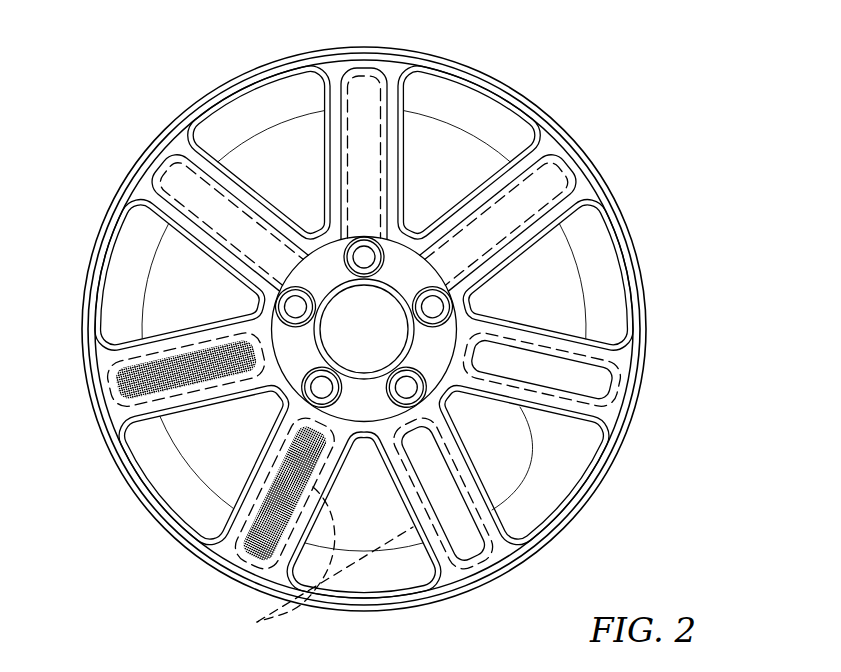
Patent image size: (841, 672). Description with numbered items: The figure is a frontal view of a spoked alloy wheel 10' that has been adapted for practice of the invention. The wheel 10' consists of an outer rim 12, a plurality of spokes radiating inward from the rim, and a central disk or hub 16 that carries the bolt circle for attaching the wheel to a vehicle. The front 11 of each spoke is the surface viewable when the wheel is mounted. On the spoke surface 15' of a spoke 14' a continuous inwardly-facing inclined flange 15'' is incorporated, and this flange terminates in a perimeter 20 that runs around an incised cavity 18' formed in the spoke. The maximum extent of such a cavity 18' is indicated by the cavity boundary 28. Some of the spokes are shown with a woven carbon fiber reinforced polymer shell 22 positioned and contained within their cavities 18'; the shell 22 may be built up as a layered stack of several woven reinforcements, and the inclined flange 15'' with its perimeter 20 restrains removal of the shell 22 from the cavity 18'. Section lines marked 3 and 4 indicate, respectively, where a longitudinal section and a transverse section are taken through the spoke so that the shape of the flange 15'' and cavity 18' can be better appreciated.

The wheel 10' is at (385, 328).
The front 11 is at (478, 92).
The rim 12 is at (632, 245).
The spoke 14' is at (561, 361).
The spoke surface 15' is at (133, 369).
The inwardly-facing inclined flange 15'' is at (144, 348).
The hub 16 is at (332, 257).
The incised cavity 18' is at (579, 451).
The perimeter 20 is at (577, 338).
The woven carbon fiber reinforced polymer shell 22 is at (262, 494).
The cavity boundary 28 is at (320, 562).
The longitudinal section 3 is at (364, 237).
The transverse section 4 is at (246, 182).